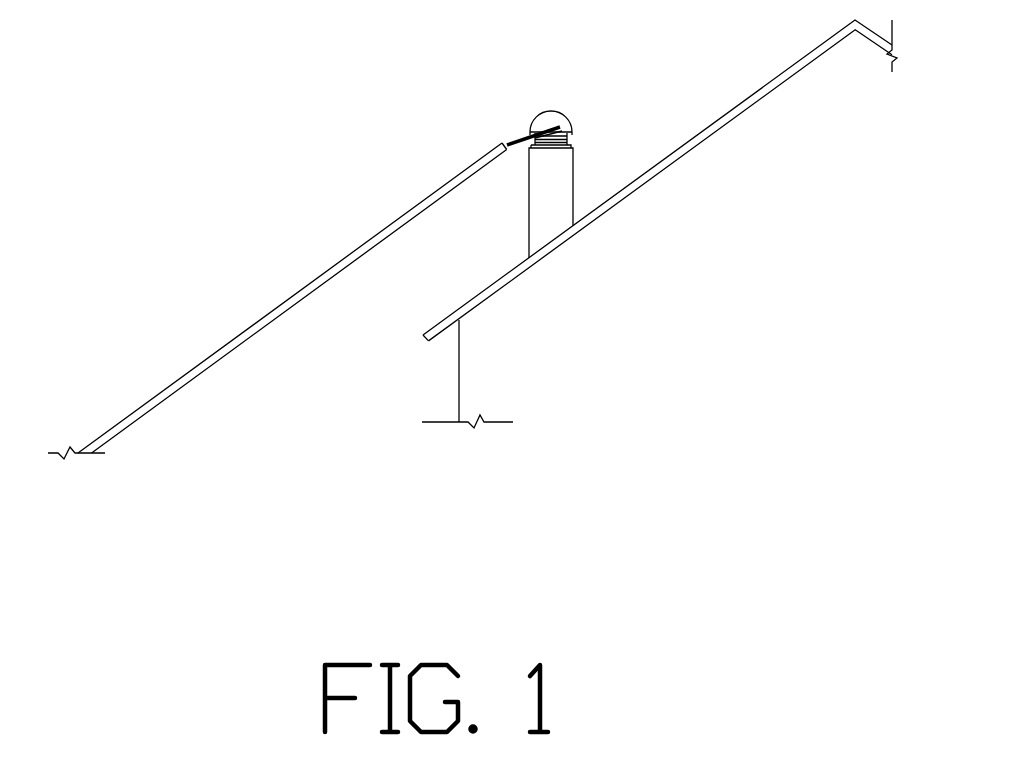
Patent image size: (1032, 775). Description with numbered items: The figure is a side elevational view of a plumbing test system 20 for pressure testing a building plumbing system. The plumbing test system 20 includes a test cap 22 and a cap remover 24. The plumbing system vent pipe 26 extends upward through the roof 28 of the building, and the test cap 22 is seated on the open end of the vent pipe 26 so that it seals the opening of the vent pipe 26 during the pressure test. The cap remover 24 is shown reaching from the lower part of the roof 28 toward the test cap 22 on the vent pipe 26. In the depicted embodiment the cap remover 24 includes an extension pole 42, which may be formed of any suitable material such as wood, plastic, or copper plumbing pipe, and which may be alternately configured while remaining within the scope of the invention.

The plumbing test system 20 is at (228, 122).
The test cap 22 is at (558, 113).
The cap remover 24 is at (308, 284).
The plumbing system vent pipe 26 is at (574, 180).
The roof 28 is at (783, 72).
The extension pole 42 is at (138, 409).